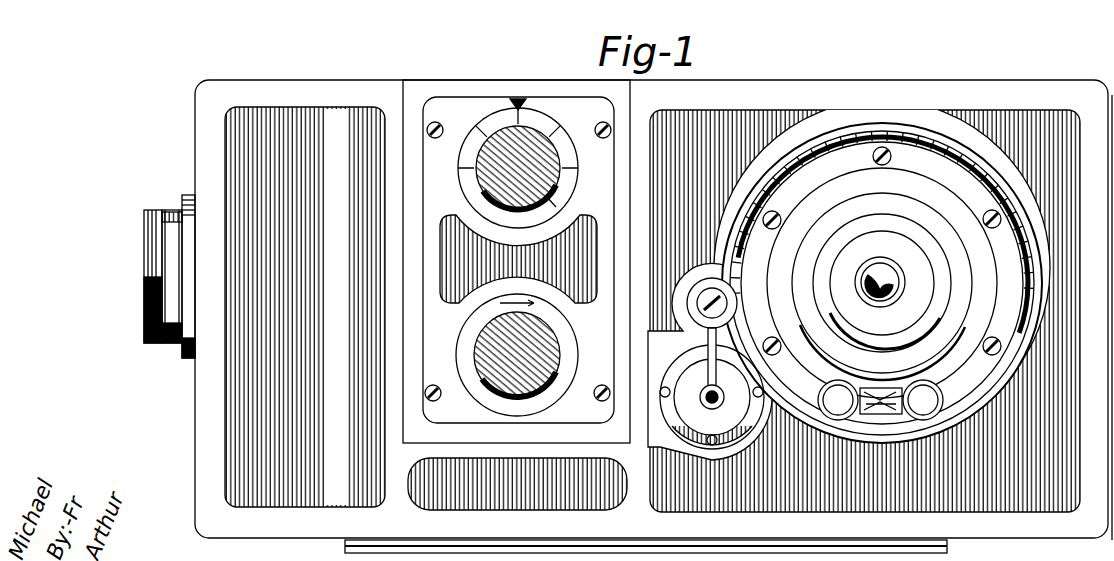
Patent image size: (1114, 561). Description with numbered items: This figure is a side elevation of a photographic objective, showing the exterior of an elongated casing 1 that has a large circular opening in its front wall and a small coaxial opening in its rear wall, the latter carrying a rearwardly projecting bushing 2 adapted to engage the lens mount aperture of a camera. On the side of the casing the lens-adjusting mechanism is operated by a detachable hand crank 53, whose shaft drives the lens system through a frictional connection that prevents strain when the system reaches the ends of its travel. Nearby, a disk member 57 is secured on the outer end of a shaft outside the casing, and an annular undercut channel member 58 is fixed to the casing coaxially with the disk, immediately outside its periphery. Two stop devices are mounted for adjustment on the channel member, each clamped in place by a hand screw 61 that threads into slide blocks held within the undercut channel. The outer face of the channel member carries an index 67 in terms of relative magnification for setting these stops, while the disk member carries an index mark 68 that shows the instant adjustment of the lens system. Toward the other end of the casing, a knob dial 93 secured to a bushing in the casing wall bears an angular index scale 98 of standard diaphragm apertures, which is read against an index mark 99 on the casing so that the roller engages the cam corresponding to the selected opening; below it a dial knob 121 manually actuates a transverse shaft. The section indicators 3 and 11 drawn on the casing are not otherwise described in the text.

The casing 1 is at (1023, 90).
The bushing 2 is at (173, 210).
The section line 3 is at (517, 560).
The lever 11 is at (707, 334).
The hand crank 53 is at (702, 362).
The disk member 57 is at (883, 187).
The annular undercut channel member 58 is at (832, 128).
The hand screw 61 is at (830, 386).
The index in terms of relative magnification 67 is at (885, 128).
The index mark 68 is at (893, 375).
The knob dial 93 is at (571, 183).
The index scale 98 is at (466, 168).
The index mark 99 is at (527, 102).
The dial knob 121 is at (485, 368).